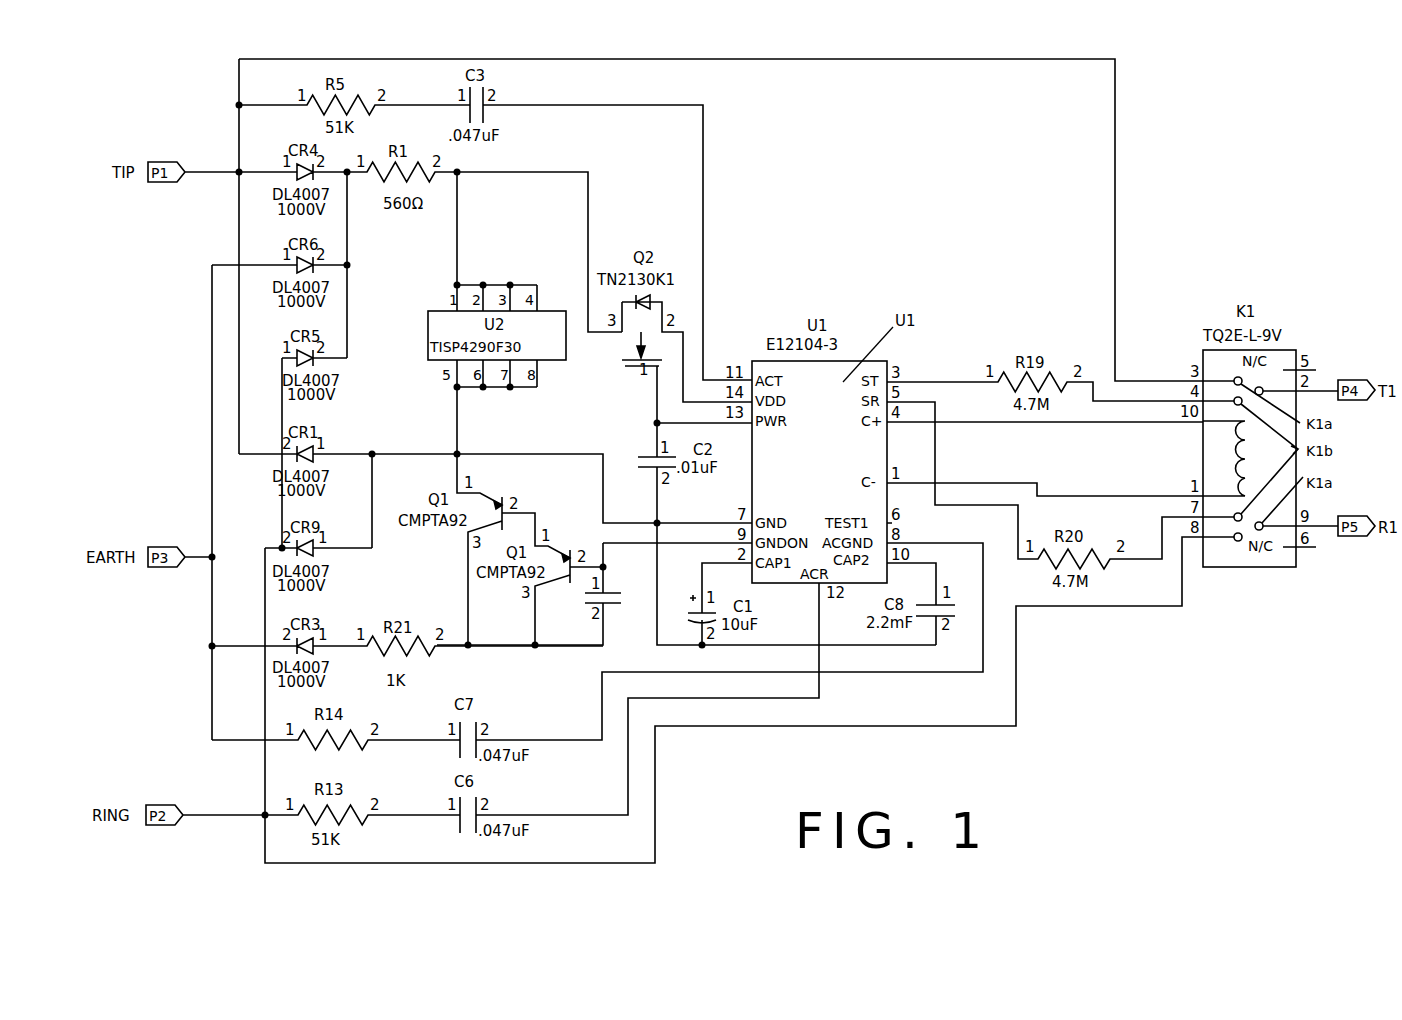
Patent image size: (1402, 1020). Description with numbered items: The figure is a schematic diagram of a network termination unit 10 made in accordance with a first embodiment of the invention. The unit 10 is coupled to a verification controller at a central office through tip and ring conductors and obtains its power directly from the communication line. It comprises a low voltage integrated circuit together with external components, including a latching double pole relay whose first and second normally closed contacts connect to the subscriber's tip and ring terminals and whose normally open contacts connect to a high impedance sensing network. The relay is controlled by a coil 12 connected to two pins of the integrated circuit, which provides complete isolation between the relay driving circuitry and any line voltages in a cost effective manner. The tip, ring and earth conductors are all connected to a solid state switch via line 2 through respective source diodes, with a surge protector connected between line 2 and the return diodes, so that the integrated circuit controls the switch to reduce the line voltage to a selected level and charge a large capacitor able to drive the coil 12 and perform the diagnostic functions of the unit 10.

The network termination unit 10 is at (1176, 272).
The coil 12 is at (1236, 467).
The line 2 is at (545, 172).